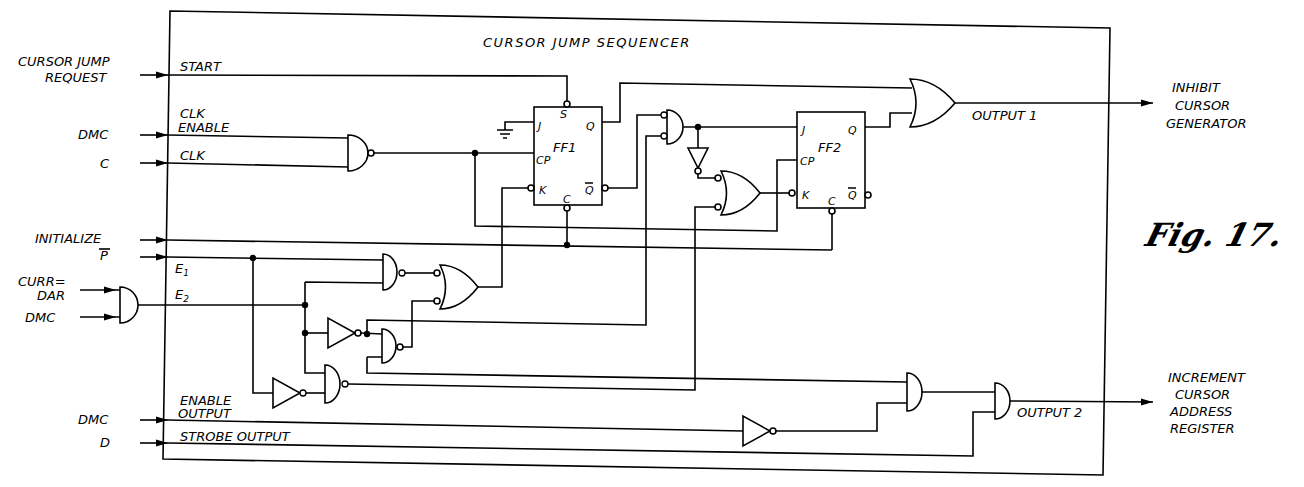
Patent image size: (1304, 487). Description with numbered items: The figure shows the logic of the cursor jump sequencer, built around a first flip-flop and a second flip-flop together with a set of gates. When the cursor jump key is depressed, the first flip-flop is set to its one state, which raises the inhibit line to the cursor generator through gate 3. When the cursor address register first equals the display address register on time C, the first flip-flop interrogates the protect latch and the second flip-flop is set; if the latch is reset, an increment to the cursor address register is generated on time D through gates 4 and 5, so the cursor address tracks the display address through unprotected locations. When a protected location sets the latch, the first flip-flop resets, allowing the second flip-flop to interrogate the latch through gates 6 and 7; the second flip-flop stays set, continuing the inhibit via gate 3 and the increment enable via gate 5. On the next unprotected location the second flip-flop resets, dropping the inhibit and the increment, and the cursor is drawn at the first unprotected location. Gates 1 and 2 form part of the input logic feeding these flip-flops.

The NAND gate 1 is at (394, 272).
The AND gate with inverting inputs 2 is at (672, 127).
The gate No. 3 is at (932, 103).
The gate No. 4 is at (1002, 401).
The gate No. 5 is at (914, 392).
The gate No. 6 is at (336, 384).
The gate No. 7 is at (289, 393).